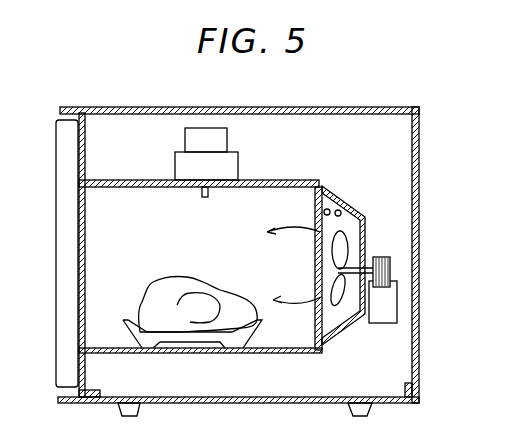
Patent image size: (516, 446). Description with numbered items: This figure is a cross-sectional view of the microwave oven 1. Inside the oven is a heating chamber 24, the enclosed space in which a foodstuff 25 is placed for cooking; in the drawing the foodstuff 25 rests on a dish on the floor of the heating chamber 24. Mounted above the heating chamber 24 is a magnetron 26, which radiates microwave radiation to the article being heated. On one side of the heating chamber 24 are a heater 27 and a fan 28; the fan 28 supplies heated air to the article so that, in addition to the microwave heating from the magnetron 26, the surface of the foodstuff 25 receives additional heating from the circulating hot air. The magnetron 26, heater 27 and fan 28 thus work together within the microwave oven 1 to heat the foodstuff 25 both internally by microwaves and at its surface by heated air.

The microwave oven 1 is at (303, 107).
The heating chamber 24 is at (98, 230).
The foodstuff 25 is at (142, 305).
The magnetron 26 is at (210, 137).
The heater 27 is at (340, 203).
The fan 28 is at (340, 250).